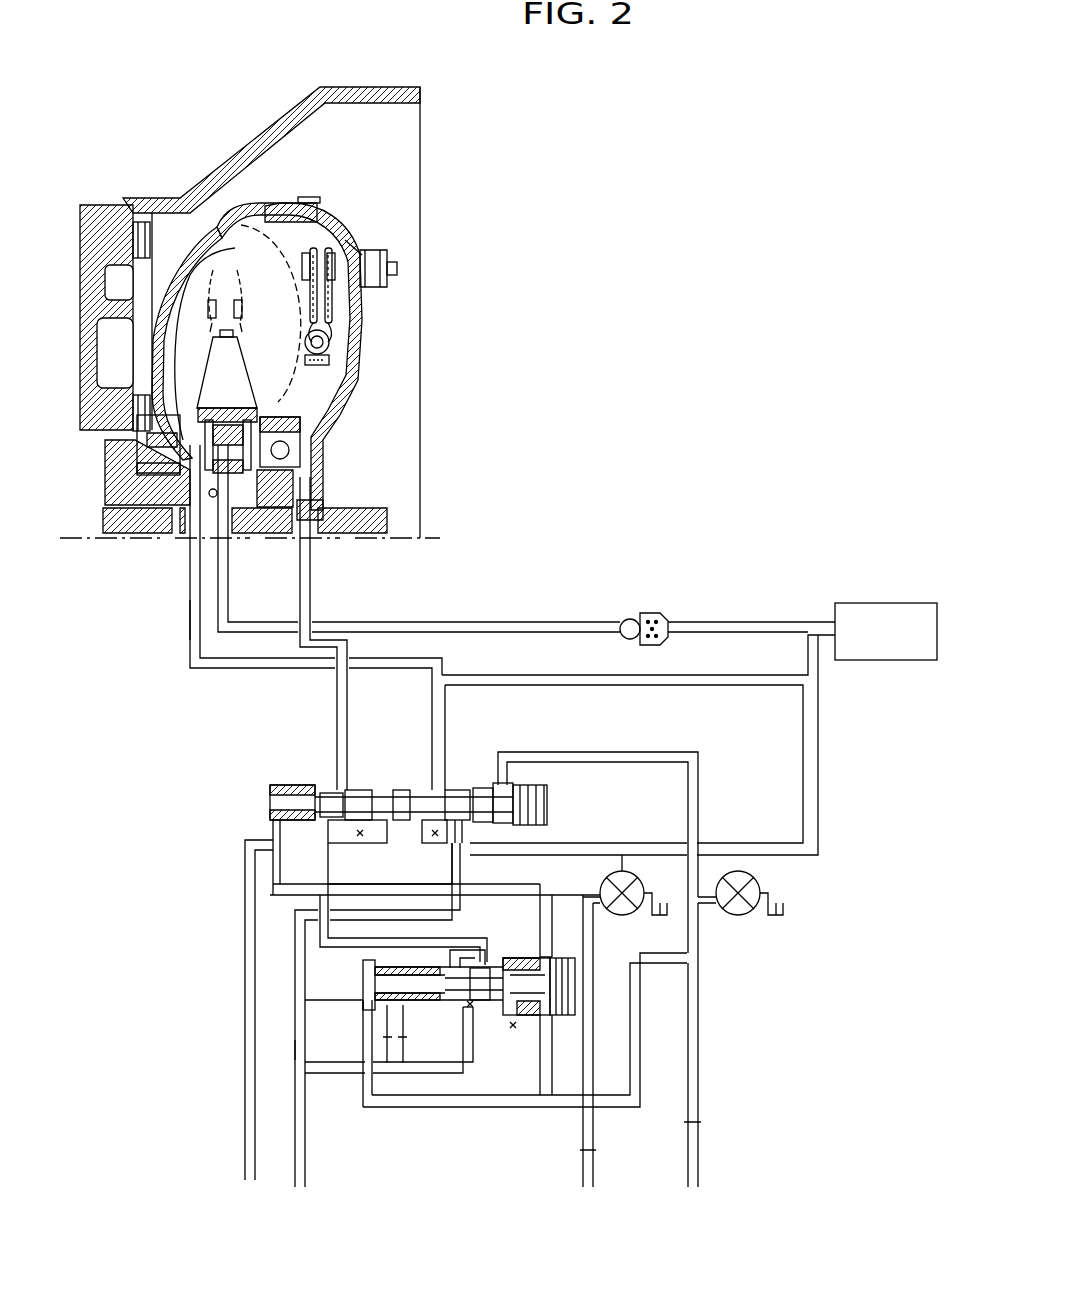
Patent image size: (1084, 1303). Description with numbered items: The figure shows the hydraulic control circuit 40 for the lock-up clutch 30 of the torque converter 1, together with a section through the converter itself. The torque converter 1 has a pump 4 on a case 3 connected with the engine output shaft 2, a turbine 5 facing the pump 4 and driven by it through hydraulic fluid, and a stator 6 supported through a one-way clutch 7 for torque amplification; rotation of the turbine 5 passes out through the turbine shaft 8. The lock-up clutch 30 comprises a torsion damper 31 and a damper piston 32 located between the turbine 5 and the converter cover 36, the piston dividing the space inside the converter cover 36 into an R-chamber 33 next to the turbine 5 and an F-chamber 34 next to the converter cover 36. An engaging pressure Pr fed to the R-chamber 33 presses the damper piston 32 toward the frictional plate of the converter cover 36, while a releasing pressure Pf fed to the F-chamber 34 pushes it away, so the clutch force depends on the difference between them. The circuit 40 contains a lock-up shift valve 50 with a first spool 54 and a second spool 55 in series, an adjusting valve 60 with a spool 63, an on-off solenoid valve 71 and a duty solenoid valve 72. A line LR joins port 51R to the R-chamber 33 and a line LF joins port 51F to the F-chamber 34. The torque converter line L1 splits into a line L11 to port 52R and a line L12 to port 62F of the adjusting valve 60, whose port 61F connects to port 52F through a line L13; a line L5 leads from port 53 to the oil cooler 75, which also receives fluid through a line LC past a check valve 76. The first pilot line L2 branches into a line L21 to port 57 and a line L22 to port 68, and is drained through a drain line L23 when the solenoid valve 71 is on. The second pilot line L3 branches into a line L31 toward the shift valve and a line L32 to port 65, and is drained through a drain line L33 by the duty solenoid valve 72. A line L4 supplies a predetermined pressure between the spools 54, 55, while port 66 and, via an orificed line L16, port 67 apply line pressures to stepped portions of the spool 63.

The torque converter 1 is at (372, 198).
The engine output shaft 2 is at (370, 517).
The case 3 is at (222, 213).
The pump 4 is at (197, 247).
The turbine 5 is at (262, 275).
The stator 6 is at (232, 373).
The one-way clutch 7 is at (235, 433).
The turbine shaft 8 is at (293, 500).
The lock-up clutch 30 is at (343, 297).
The torsion damper 31 is at (340, 357).
The damper piston 32 is at (343, 247).
The R-chamber 33 is at (287, 237).
The F-chamber 34 is at (353, 325).
The converter cover 36 is at (357, 270).
The hydraulic control circuit 40 is at (592, 598).
The lock-up shift valve 50 is at (263, 770).
The port 51F is at (340, 790).
The port 51R is at (438, 790).
The port 52F is at (323, 828).
The port 52R is at (528, 840).
The port 53 is at (420, 828).
The first spool 54 is at (405, 790).
The second spool 55 is at (363, 790).
The port 57 is at (503, 780).
The adjusting valve 60 is at (350, 1002).
The port 61F is at (453, 950).
The port 62F is at (467, 1010).
The spool 63 is at (528, 1015).
The port 65 is at (550, 963).
The port 66 is at (520, 957).
The port 67 is at (397, 1005).
The port 68 is at (367, 1003).
The on-off solenoid valve 71 is at (757, 880).
The duty solenoid valve 72 is at (630, 913).
The oil cooler 75 is at (870, 603).
The check valve 76 is at (660, 610).
The line LR is at (188, 587).
The line LF is at (312, 565).
The line LC is at (528, 620).
The hydraulic pressure Pf is at (308, 615).
The hydraulic pressure Pr is at (200, 630).
The torque converter line L1 is at (307, 1170).
The first pilot line L2 is at (698, 1157).
The second pilot line L3 is at (595, 1160).
The line L4 is at (243, 1150).
The line L5 is at (593, 890).
The line L11 is at (290, 1060).
The line L12 is at (347, 1073).
The line L13 is at (367, 980).
The line L16 is at (418, 1063).
The line L21 is at (683, 757).
The line L22 is at (505, 1107).
The drain line L23 is at (713, 840).
The line L31 is at (483, 893).
The line L32 is at (545, 902).
The drain line L33 is at (597, 888).